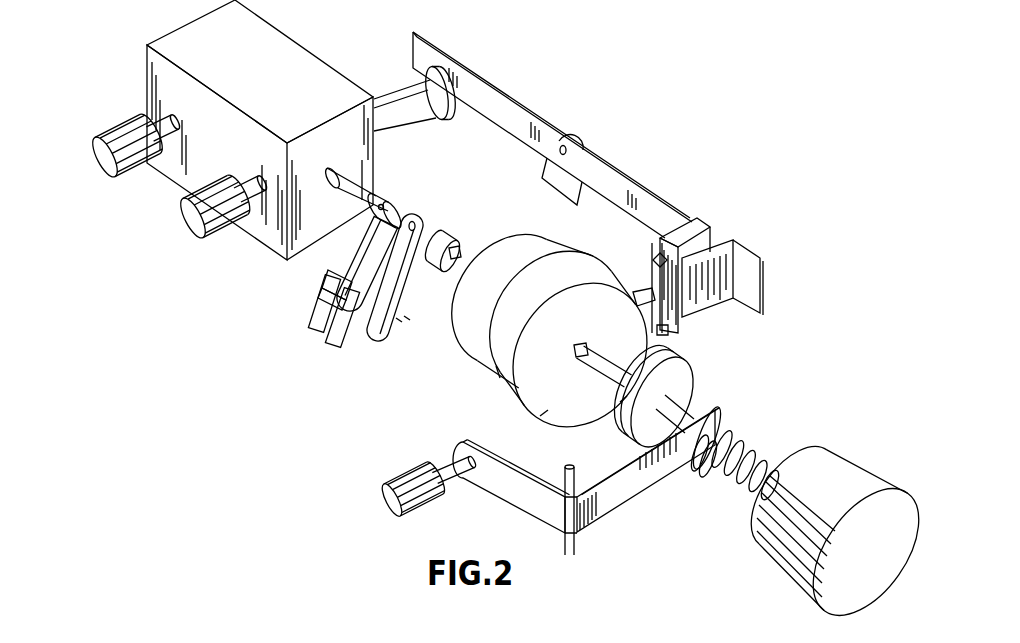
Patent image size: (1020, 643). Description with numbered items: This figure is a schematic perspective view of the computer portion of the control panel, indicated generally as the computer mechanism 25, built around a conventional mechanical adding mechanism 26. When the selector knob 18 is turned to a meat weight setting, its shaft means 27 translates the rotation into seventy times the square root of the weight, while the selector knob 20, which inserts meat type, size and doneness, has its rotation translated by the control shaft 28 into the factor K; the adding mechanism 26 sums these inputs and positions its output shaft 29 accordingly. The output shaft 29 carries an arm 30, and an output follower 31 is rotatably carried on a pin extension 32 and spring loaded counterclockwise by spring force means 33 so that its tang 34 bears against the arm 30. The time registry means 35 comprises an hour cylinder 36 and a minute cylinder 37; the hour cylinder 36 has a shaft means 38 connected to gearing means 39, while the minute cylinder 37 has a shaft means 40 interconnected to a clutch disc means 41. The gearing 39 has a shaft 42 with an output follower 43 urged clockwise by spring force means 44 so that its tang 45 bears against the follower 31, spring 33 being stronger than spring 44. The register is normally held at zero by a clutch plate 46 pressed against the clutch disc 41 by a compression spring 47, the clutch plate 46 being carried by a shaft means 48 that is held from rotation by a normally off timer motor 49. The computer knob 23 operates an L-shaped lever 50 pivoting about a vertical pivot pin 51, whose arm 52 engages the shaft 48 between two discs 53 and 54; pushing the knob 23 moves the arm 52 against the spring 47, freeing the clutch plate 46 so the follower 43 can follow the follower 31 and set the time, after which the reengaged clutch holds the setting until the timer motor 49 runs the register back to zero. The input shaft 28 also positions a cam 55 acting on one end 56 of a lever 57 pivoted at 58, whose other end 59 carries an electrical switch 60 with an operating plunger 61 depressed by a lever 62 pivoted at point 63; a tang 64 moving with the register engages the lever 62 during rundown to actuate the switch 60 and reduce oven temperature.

The selector knob 18 is at (140, 158).
The selector knob 20 is at (195, 225).
The computer knob 23 is at (423, 500).
The computer mechanism 25 is at (718, 119).
The mechanical adding mechanism 26 is at (283, 45).
The shaft means 27 is at (162, 125).
The control shaft 28 is at (258, 200).
The output shaft 29 is at (358, 187).
The arm 30 is at (378, 240).
The output follower 31 is at (395, 255).
The pin extension 32 is at (414, 222).
The spring force means 33 is at (332, 282).
The tang 34 is at (338, 299).
The time registry means 35 is at (488, 396).
The hour cylinder 36 is at (492, 363).
The minute cylinder 37 is at (545, 400).
The shaft means 38 is at (532, 278).
The gearing means 39 is at (415, 318).
The shaft means 40 is at (597, 360).
The clutch disc means 41 is at (623, 405).
The shaft 42 is at (458, 240).
The output follower 43 is at (392, 338).
The spring force means 44 is at (400, 323).
The tang 45 is at (360, 330).
The clutch plate 46 is at (683, 385).
The compression spring 47 is at (750, 450).
The shaft means 48 is at (680, 407).
The timer motor 49 is at (855, 465).
The L-shaped lever 50 is at (540, 498).
The pivot pin 51 is at (580, 543).
The arm 52 is at (633, 488).
The disc 53 is at (712, 410).
The disc 54 is at (706, 472).
The cam 55 is at (420, 82).
The lever end 56 is at (423, 48).
The lever 57 is at (507, 105).
The pivot 58 is at (560, 150).
The lever end 59 is at (715, 242).
The electrical switch 60 is at (700, 233).
The operating plunger 61 is at (668, 238).
The lever 62 is at (655, 280).
The pivot point 63 is at (668, 330).
The tang 64 is at (640, 289).